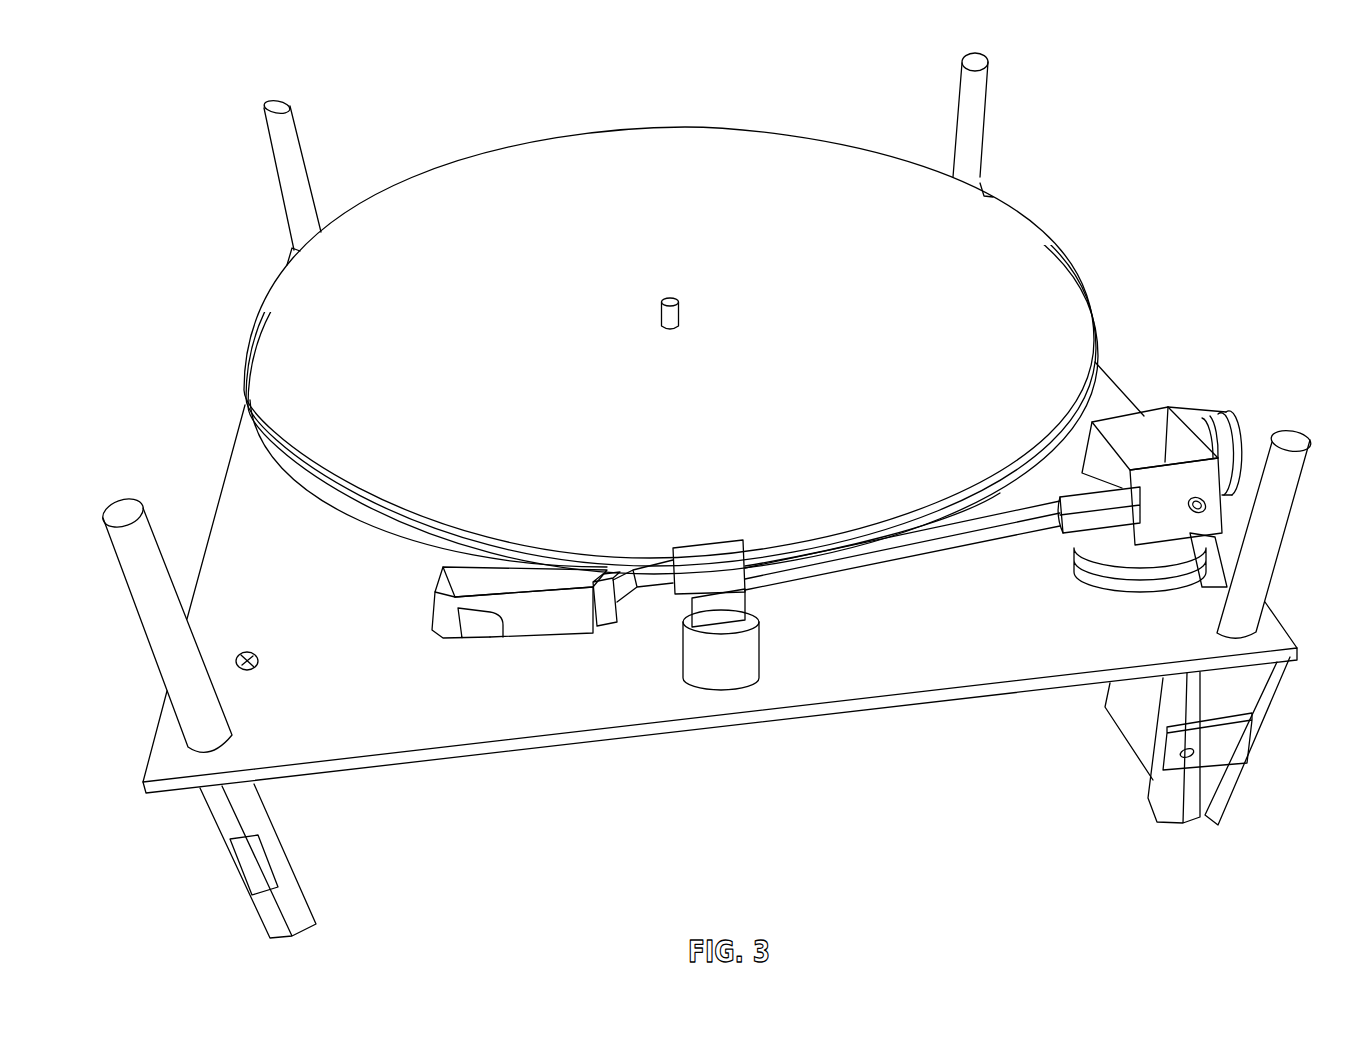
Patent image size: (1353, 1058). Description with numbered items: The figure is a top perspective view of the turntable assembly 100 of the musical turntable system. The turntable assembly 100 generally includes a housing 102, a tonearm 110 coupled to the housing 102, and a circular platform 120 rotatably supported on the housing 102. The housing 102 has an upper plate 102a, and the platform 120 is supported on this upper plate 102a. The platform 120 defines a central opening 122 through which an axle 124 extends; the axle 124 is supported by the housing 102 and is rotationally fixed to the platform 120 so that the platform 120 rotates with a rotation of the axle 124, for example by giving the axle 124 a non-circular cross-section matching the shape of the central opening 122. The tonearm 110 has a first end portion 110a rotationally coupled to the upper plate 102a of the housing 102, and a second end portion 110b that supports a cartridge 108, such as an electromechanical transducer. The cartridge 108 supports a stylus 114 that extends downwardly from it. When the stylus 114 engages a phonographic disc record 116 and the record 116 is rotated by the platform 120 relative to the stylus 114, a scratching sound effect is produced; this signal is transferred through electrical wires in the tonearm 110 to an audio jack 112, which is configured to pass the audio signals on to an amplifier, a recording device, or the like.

The turntable assembly 100 is at (808, 70).
The housing 102 is at (238, 512).
The upper plate 102a is at (176, 790).
The cartridge 108 is at (540, 628).
The tonearm 110 is at (1152, 400).
The first end portion 110a is at (1170, 410).
The second end portion 110b is at (652, 585).
The audio jack 112 is at (1128, 728).
The stylus 114 is at (463, 640).
The phonographic disc record 116 is at (842, 167).
The circular platform 120 is at (1104, 333).
The central opening 122 is at (650, 326).
The axle 124 is at (668, 298).